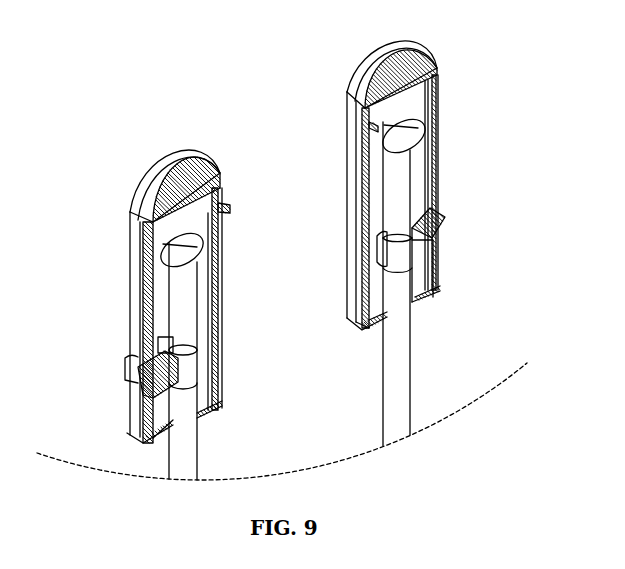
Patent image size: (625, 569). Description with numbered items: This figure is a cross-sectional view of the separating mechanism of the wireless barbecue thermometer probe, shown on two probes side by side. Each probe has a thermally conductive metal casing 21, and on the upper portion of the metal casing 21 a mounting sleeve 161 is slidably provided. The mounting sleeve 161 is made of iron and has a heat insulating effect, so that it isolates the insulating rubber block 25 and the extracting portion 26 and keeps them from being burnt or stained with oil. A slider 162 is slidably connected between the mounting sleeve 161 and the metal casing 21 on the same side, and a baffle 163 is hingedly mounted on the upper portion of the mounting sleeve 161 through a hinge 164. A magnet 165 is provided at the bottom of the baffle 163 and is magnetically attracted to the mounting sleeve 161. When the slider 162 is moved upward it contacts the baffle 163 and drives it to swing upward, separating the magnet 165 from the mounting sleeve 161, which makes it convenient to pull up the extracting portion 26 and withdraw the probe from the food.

The metal casing 21 is at (392, 355).
The insulating rubber block 25 is at (176, 311).
The extracting portion 26 is at (142, 245).
The mounting sleeve 161 is at (349, 148).
The slider 162 is at (441, 222).
The baffle 163 is at (360, 68).
The hinge 164 is at (365, 126).
The magnet 165 is at (435, 88).